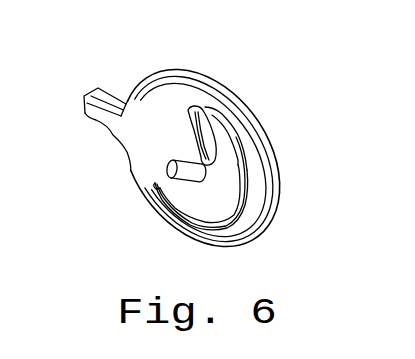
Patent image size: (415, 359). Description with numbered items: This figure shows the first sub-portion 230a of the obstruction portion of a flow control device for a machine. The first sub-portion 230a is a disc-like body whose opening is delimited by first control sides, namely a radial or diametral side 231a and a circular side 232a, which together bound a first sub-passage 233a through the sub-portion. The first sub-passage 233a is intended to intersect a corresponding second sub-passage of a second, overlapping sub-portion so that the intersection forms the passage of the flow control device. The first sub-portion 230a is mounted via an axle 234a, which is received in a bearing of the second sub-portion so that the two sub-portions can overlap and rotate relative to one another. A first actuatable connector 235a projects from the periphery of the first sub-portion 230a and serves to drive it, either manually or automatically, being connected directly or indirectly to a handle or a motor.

The first sub-portion 230a is at (148, 152).
The radial or diametral side 231a is at (193, 137).
The circular side 232a is at (223, 143).
The first sub-passage 233a is at (217, 177).
The axle 234a is at (178, 172).
The first actuatable connector 235a is at (97, 112).